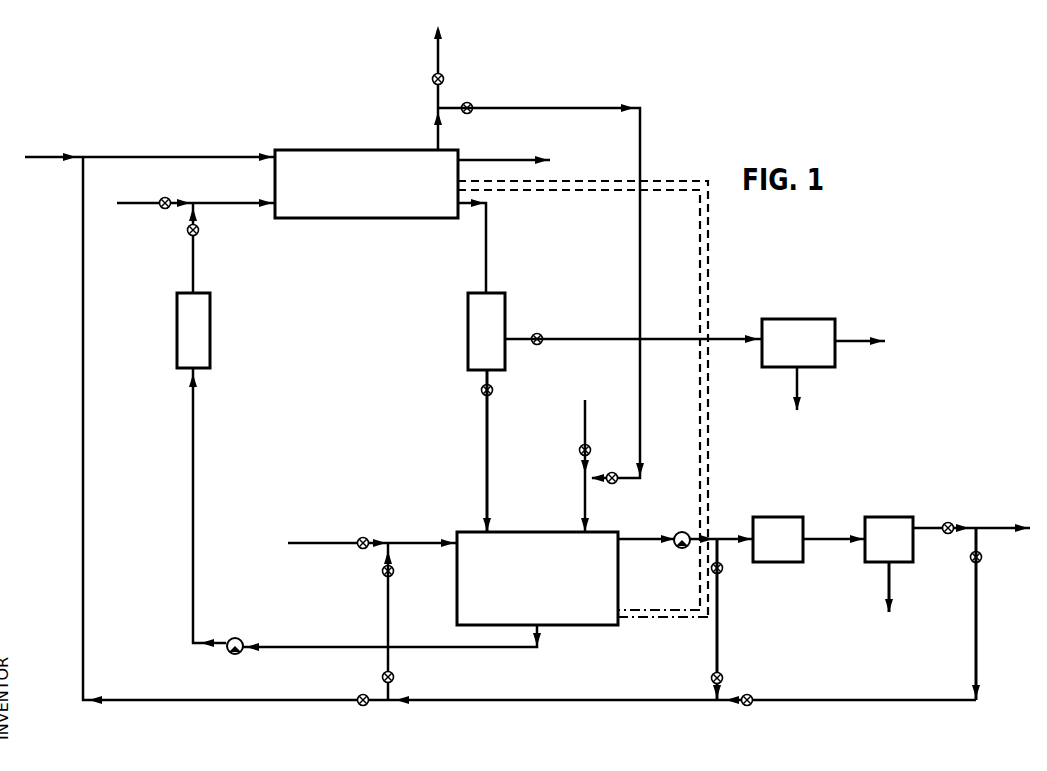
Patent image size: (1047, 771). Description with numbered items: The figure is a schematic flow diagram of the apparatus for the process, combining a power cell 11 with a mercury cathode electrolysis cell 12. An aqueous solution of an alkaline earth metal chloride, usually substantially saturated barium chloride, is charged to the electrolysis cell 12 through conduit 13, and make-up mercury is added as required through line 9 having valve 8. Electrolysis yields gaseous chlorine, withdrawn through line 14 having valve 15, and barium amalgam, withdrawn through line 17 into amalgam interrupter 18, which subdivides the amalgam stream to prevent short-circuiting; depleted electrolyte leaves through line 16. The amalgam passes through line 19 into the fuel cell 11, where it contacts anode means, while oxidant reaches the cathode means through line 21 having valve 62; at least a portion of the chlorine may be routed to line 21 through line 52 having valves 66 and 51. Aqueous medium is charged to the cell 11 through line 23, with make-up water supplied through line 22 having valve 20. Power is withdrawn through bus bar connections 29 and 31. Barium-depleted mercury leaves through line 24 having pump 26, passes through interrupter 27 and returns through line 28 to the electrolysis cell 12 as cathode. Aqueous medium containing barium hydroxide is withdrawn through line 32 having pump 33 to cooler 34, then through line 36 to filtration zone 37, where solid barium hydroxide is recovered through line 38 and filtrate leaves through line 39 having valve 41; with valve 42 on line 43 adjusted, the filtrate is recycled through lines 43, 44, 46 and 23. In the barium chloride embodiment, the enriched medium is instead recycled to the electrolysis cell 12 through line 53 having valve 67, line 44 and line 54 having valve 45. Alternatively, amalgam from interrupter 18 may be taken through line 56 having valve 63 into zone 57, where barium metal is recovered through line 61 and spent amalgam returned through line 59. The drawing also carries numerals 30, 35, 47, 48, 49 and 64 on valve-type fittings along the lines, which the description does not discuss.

The valve 8 is at (162, 208).
The line 9 is at (128, 203).
The power cell 11 is at (652, 685).
The mercury cathode electrolysis cell 12 is at (338, 90).
The conduit 13 is at (49, 157).
The line 14 is at (440, 45).
The valve 15 is at (433, 79).
The line 16 is at (512, 158).
The line 17 is at (487, 240).
The amalgam interrupter 18 is at (468, 323).
The line 19 is at (486, 450).
The valve 20 is at (359, 548).
The line 21 is at (584, 500).
The line 22 is at (326, 542).
The line 23 is at (424, 542).
The line 24 is at (453, 648).
The pump 26 is at (235, 656).
The interrupter 27 is at (177, 322).
The line 28 is at (234, 202).
The bus bar connection 29 is at (678, 608).
The valve 30 is at (199, 231).
The bus bar connection 31 is at (657, 620).
The line 32 is at (652, 538).
The pump 33 is at (675, 556).
The cooler 34 is at (773, 517).
The valve 35 is at (723, 678).
The line 36 is at (832, 539).
The filtration zone 37 is at (883, 517).
The line 38 is at (890, 583).
The line 39 is at (940, 527).
The valve 41 is at (945, 533).
The valve 42 is at (981, 561).
The line 43 is at (978, 646).
The line 44 is at (586, 702).
The valve 45 is at (376, 711).
The line 46 is at (387, 612).
The valve 47 is at (394, 571).
The valve 48 is at (751, 705).
The valve 49 is at (394, 677).
The valve 51 is at (614, 483).
The line 52 is at (589, 106).
The line 53 is at (719, 636).
The line 54 is at (83, 320).
The line 56 is at (588, 340).
The zone 57 is at (785, 318).
The line 59 is at (858, 342).
The line 61 is at (799, 387).
The valve 62 is at (580, 450).
The valve 63 is at (537, 334).
The valve 64 is at (493, 389).
The valve 66 is at (470, 104).
The valve 67 is at (722, 572).